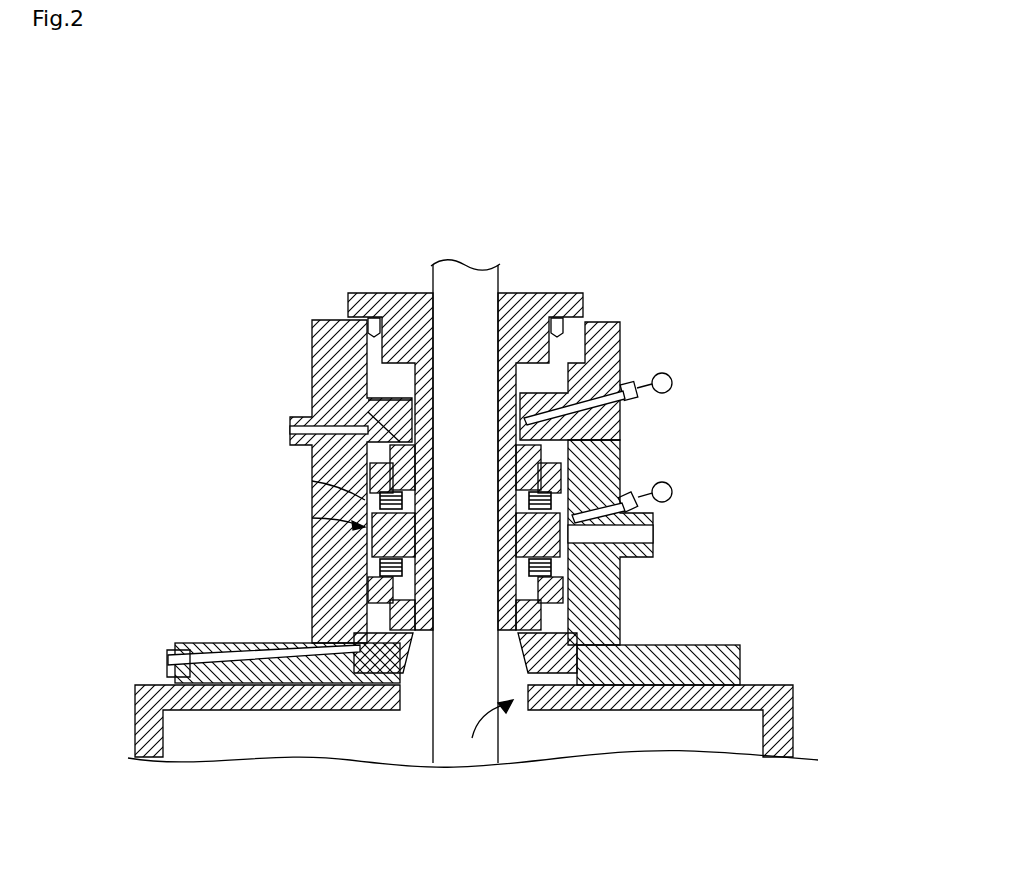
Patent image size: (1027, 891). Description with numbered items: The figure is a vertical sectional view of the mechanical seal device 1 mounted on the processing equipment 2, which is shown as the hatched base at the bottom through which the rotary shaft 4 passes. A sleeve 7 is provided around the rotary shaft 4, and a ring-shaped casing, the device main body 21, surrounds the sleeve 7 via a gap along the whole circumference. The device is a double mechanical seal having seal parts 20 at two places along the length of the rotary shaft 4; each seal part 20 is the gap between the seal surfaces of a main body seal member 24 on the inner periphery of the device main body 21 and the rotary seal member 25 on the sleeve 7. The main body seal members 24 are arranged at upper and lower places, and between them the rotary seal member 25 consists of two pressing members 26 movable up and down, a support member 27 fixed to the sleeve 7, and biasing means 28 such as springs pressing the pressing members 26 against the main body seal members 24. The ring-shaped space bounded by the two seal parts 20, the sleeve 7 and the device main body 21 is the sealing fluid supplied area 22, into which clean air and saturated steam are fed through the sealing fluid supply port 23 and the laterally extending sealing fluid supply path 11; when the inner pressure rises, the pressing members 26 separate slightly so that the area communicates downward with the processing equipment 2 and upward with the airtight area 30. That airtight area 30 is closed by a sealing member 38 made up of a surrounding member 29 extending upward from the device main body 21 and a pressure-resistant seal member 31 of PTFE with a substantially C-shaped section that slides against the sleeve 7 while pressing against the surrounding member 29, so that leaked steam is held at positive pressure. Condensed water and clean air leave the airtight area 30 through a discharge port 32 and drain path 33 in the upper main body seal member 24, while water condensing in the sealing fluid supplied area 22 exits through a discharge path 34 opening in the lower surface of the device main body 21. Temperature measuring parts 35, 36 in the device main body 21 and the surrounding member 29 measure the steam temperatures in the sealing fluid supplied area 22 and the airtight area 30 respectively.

The mechanical seal device 1 is at (600, 197).
The processing equipment 2 is at (776, 685).
The rotary shaft 4 is at (503, 283).
The sleeve 7 is at (407, 293).
The sealing fluid supply path 11 is at (655, 552).
The seal part 20 is at (580, 445).
The device main body 21 is at (312, 594).
The sealing fluid supplied area 22 is at (362, 566).
The sealing fluid supply port 23 is at (580, 575).
The main body seal member 24 is at (545, 390).
The rotary seal member 25 is at (312, 481).
The pressing member 26 is at (345, 612).
The support member 27 is at (312, 518).
The biasing means 28 is at (592, 490).
The surrounding member 29 is at (622, 358).
The airtight area 30 is at (377, 372).
The pressure-resistant seal member 31 is at (365, 322).
The discharge port 32 is at (378, 392).
The drain path 33 is at (303, 415).
The discharge path 34 is at (170, 660).
The temperature measuring part 35 is at (673, 492).
The temperature measuring part 36 is at (673, 383).
The sealing member 38 is at (705, 315).